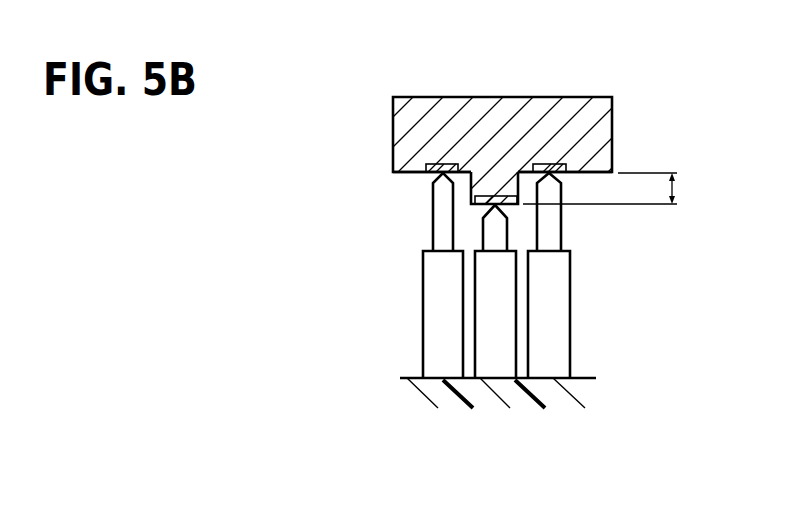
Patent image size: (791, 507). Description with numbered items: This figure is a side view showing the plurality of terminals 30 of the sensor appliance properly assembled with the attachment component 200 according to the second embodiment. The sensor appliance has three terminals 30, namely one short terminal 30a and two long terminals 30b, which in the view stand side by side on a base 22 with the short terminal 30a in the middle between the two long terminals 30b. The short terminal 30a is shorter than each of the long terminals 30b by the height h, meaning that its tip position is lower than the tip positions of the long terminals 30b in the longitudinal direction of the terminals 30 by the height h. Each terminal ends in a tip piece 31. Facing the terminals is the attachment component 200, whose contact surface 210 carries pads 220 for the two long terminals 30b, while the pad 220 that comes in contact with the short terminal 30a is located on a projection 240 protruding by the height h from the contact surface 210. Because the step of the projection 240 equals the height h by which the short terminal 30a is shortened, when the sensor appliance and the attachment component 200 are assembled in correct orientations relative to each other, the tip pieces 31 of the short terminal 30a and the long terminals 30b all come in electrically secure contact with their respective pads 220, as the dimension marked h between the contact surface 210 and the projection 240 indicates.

The attachment component 200 is at (598, 93).
The contact surface 210 is at (415, 173).
The pad 220 is at (441, 164).
The projection 240 is at (480, 188).
The base member 22 is at (418, 380).
The terminals 30 is at (516, 376).
The short terminal 30a is at (500, 360).
The long terminal 30b is at (440, 360).
The tip piece 31 is at (442, 213).
The height h is at (609, 191).